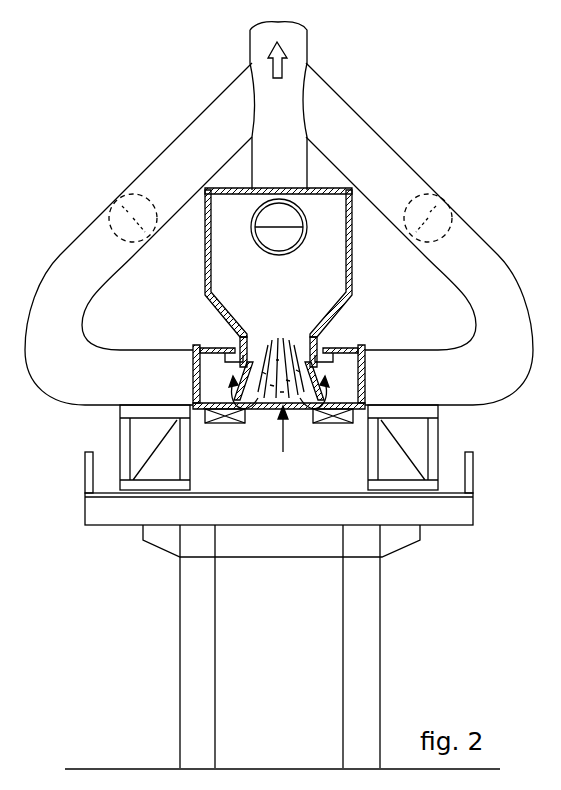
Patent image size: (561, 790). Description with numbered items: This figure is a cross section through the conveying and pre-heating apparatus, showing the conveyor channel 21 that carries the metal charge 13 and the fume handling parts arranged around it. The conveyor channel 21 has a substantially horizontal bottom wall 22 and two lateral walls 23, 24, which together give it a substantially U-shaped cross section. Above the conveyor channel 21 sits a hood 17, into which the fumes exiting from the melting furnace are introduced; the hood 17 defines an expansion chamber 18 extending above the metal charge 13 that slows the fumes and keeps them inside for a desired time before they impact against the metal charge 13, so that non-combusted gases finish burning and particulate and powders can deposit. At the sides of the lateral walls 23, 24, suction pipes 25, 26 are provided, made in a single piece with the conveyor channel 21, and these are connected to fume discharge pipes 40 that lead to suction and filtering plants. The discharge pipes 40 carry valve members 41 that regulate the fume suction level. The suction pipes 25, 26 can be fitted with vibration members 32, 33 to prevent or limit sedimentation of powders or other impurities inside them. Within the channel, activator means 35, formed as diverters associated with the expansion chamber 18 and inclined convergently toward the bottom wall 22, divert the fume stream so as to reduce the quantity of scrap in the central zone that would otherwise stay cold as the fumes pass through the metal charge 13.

The metal charge 13 is at (292, 338).
The hood 17 is at (238, 191).
The expansion chamber 18 is at (352, 250).
The conveyor channel 21 is at (292, 444).
The bottom wall 22 is at (272, 432).
The lateral wall 23 is at (240, 406).
The lateral wall 24 is at (324, 405).
The suction pipe 25 is at (196, 377).
The suction pipe 26 is at (366, 376).
The vibration member 32 is at (207, 423).
The vibration member 33 is at (357, 423).
The activator means 35 is at (263, 370).
The fume discharge pipe 40 is at (178, 170).
The valve member 41 is at (117, 194).